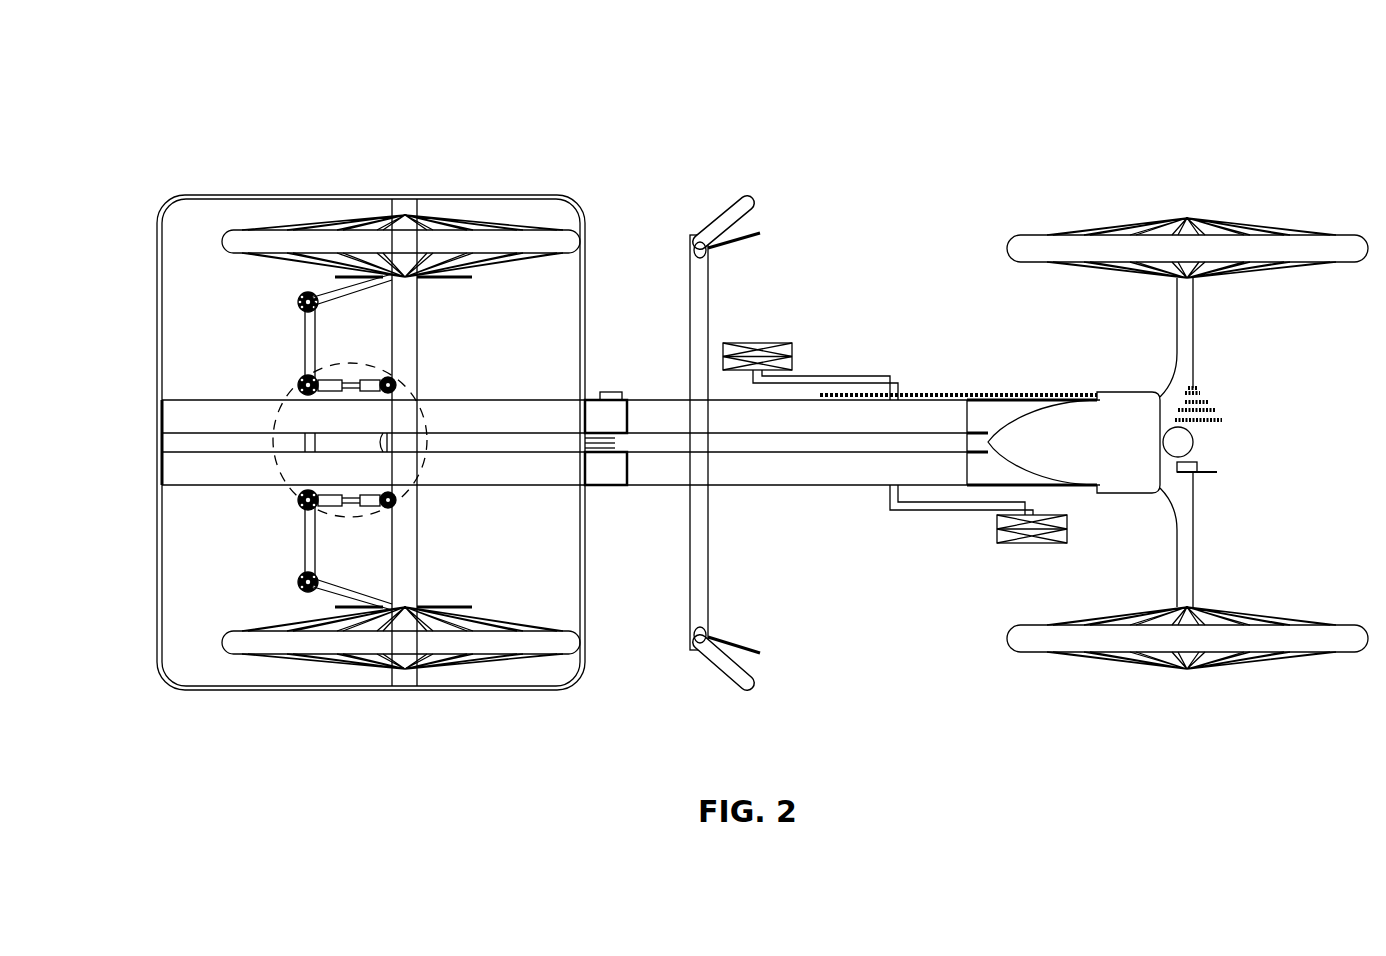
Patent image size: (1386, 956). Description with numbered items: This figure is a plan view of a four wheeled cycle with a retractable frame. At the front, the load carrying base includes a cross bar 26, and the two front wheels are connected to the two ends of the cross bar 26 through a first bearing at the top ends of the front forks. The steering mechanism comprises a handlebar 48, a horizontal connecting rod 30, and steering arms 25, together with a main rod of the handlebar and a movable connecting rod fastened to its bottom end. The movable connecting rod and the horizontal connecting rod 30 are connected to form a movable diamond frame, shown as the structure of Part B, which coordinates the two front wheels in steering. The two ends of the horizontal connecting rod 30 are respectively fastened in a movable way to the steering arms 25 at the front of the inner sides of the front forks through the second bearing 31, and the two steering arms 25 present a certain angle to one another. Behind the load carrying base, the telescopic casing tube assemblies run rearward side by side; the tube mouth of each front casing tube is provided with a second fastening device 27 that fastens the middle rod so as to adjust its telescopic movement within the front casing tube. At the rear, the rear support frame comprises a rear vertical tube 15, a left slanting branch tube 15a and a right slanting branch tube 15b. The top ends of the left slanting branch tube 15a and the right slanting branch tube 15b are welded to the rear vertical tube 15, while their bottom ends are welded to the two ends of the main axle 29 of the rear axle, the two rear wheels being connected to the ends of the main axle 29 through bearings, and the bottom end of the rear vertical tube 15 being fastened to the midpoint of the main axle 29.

The steering arms 25 is at (393, 367).
The cross bar 26 is at (364, 376).
The second fastening device 27 is at (648, 273).
The handlebar 48 is at (818, 375).
The second bearing 31 is at (288, 293).
The Part B is at (285, 383).
The horizontal connecting rod 30 is at (310, 538).
The main axle of the rear axle 29 is at (1187, 315).
The right slanting branch tube 15b is at (1173, 388).
The rear vertical tube 15 is at (1172, 453).
The left slanting branch tube 15a is at (1172, 497).